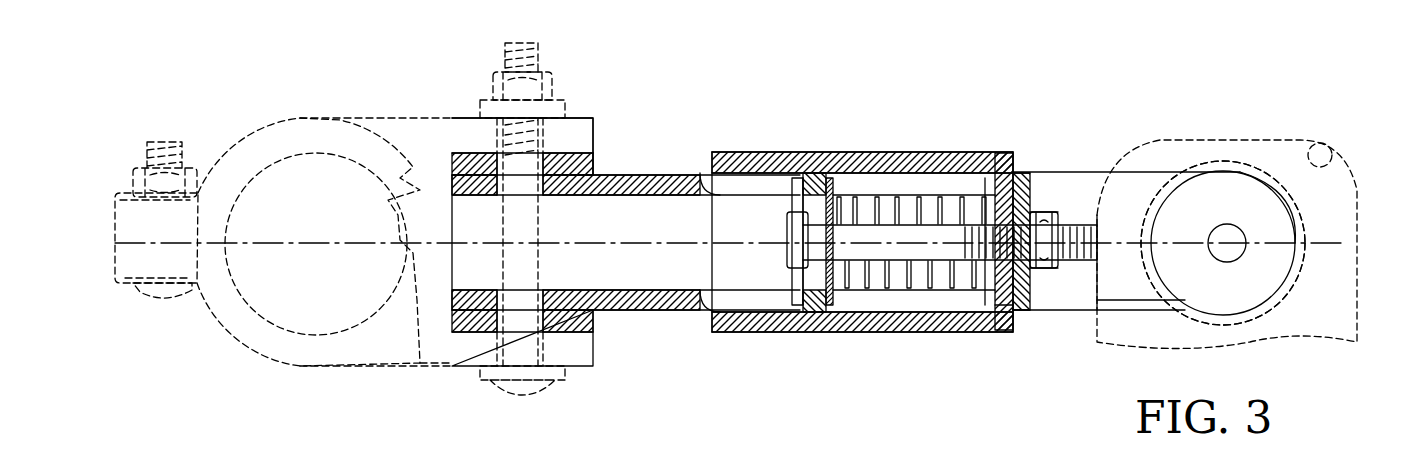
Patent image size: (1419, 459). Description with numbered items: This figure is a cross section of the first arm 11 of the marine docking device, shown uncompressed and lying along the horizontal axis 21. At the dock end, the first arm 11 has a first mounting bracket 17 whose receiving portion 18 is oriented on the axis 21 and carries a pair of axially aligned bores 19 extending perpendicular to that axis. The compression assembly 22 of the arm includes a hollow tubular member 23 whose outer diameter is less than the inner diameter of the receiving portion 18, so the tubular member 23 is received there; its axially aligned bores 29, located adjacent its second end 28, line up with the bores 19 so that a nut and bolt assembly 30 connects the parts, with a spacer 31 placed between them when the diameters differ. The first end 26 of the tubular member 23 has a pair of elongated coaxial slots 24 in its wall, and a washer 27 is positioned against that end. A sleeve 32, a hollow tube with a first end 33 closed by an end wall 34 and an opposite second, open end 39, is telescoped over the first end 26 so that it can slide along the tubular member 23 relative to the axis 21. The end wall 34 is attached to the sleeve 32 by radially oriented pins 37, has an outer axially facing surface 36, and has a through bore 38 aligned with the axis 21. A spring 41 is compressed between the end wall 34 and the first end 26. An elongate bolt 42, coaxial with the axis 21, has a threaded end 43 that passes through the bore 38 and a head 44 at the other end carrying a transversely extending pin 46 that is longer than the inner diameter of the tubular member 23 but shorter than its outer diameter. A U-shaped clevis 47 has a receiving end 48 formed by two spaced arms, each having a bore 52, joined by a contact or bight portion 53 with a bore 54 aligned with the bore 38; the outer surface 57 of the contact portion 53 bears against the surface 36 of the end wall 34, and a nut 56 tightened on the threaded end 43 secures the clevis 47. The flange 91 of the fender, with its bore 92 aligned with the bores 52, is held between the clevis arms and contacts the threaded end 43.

The first arm 11 is at (737, 120).
The first mounting bracket 17 is at (303, 118).
The receiving portion 18 is at (586, 115).
The axially aligned bores 19 is at (493, 100).
The horizontal axis 21 is at (1333, 270).
The compression assembly 22 is at (849, 133).
The hollow tubular member 23 is at (652, 190).
The slots 24 is at (738, 150).
The first end 26 is at (838, 318).
The washer 27 is at (862, 332).
The second end 28 is at (450, 290).
The axially aligned bores 29 is at (500, 165).
The nut and bolt assembly 30 is at (530, 382).
The spacer 31 is at (590, 160).
The sleeve 32 is at (868, 152).
The first end 33 is at (1022, 320).
The end wall 34 is at (1015, 190).
The outer axially facing surface 36 is at (1046, 300).
The radially oriented pins 37 is at (1008, 320).
The through bore 38 is at (980, 175).
The second, open end 39 is at (742, 332).
The spring 41 is at (905, 308).
The elongate bolt 42 is at (907, 245).
The threaded end 43 is at (1002, 318).
The head 44 is at (787, 306).
The transversely extending pin 46 is at (808, 176).
The U-shaped clevis 47 is at (1083, 190).
The receiving end 48 is at (1262, 262).
The bore 52 is at (1235, 253).
The contact or bight portion 53 is at (1056, 270).
The bore 54 is at (1047, 190).
The nut 56 is at (1098, 190).
The outer surface 57 is at (1125, 305).
The flange 91 is at (1313, 148).
The bore 92 is at (1237, 223).